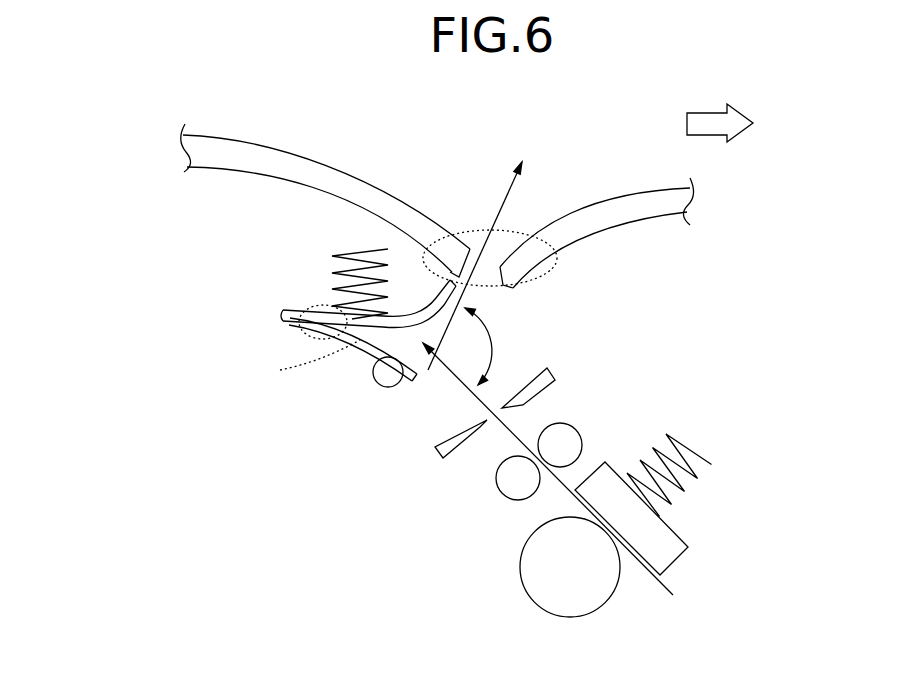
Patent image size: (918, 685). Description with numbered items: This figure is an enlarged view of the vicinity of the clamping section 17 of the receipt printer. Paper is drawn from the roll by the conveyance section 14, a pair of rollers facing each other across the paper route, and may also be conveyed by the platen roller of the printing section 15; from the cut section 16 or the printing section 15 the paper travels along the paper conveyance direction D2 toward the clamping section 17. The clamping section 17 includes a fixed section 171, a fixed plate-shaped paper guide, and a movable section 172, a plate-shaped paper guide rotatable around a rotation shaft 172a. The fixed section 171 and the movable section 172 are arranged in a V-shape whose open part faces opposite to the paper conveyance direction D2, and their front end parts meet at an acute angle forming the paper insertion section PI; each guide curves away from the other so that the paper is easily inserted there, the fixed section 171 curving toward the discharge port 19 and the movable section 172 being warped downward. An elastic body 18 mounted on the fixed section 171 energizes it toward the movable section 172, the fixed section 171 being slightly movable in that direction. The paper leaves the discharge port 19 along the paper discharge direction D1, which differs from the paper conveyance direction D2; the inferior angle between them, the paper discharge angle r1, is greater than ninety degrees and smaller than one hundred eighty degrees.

The conveyance section 14 is at (585, 385).
The printing section 15 is at (663, 413).
The cut section 16 is at (540, 342).
The clamping section 17 is at (168, 273).
The fixed section 171 is at (287, 315).
The movable section 172 is at (340, 353).
The rotation shaft 172a is at (385, 392).
The elastic body 18 is at (330, 273).
The discharge port 19 is at (557, 258).
The paper insertion section PI is at (300, 330).
The paper discharge direction D1 is at (486, 250).
The paper conveyance direction D2 is at (566, 485).
The paper discharge angle r1 is at (493, 346).